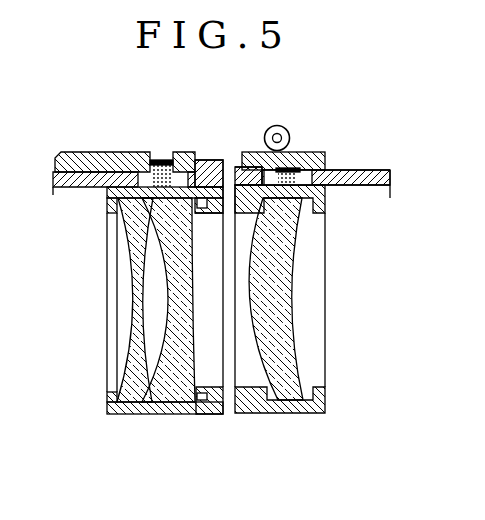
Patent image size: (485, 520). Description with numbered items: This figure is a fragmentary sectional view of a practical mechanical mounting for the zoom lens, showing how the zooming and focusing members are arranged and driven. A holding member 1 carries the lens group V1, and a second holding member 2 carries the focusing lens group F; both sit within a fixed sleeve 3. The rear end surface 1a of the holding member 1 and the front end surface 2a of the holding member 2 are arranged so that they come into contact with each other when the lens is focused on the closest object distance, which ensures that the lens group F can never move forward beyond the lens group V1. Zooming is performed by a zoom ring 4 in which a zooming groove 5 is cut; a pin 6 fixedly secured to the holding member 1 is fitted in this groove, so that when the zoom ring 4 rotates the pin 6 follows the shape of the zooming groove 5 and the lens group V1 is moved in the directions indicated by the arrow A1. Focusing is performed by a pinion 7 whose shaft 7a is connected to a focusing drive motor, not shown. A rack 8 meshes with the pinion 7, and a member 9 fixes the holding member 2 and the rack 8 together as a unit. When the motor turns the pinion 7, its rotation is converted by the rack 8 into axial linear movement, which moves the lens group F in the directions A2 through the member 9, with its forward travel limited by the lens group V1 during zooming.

The holding member 1 is at (107, 195).
The rear end surface 1a is at (225, 195).
The holding member 2 is at (325, 193).
The front end surface 2a is at (235, 172).
The fixed sleeve 3 is at (204, 168).
The zoom ring 4 is at (96, 160).
The zooming groove 5 is at (166, 165).
The pin 6 is at (152, 160).
The pinion 7 is at (281, 135).
The shaft 7a is at (270, 129).
The rack 8 is at (308, 160).
The fixing member 9 is at (304, 178).
The lens group V1 is at (128, 333).
The lens group F is at (293, 332).
The arrow A1 is at (178, 437).
The directions A2 is at (297, 437).